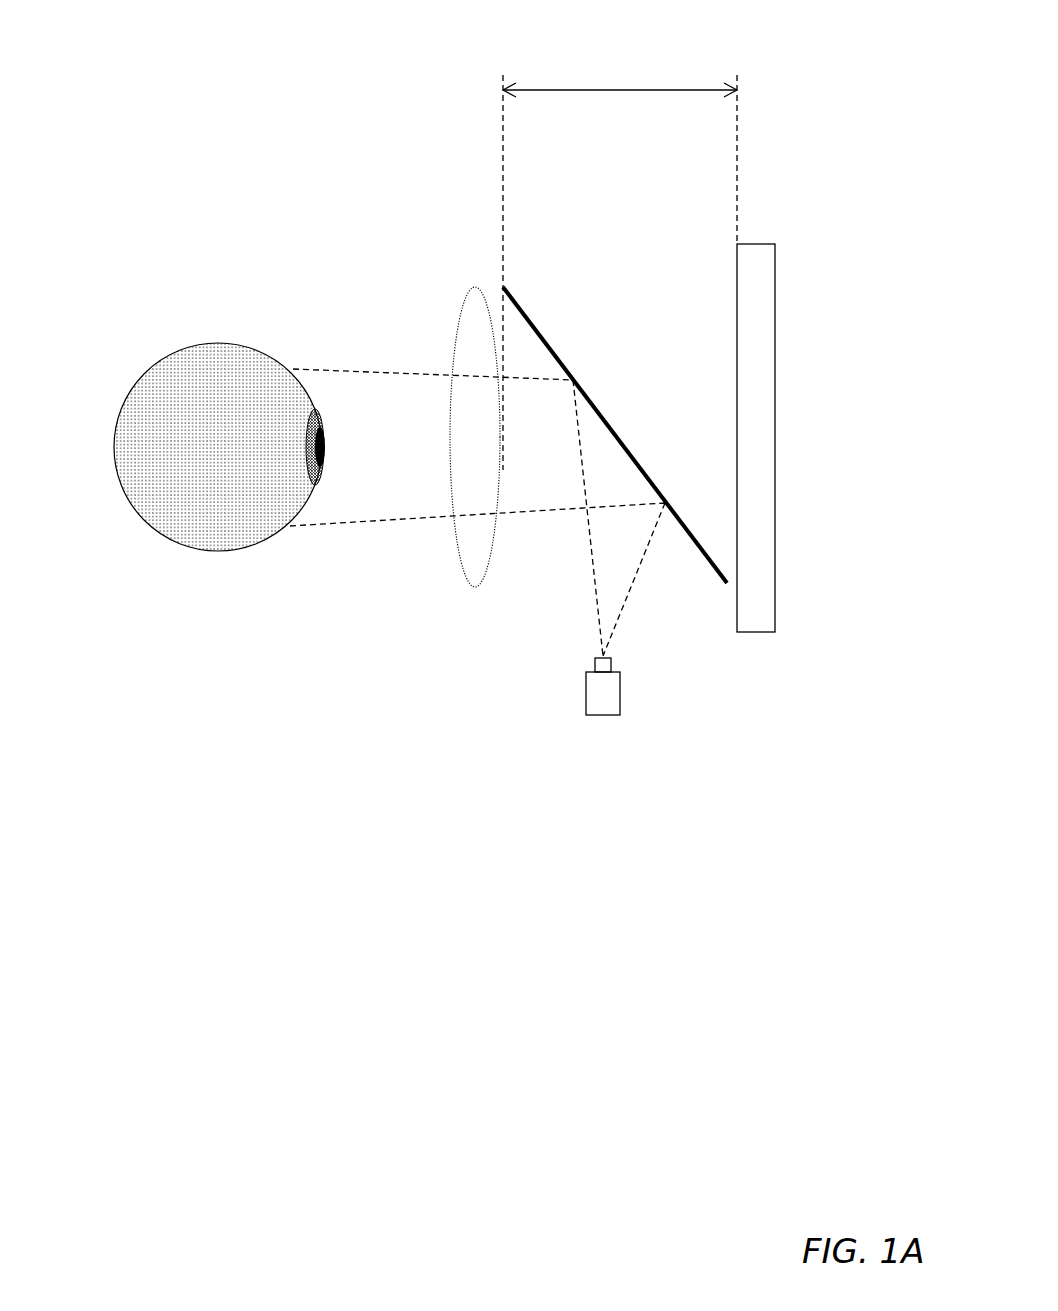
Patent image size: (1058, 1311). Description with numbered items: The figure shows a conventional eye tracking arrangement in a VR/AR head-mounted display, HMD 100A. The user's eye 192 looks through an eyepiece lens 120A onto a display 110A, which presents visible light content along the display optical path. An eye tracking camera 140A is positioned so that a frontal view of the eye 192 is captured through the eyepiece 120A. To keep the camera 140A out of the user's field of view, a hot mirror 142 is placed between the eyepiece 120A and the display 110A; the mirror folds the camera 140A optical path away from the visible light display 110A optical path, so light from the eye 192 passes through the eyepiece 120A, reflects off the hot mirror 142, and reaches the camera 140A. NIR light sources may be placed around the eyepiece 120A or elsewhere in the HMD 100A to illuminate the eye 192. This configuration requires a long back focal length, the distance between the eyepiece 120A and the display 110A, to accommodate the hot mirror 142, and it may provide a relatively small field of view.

The HMD 100A is at (802, 82).
The display 110A is at (780, 296).
The eyepiece lens 120A is at (463, 312).
The hot mirror 142 is at (620, 440).
The eye tracking camera 140A is at (600, 718).
The eye 192 is at (127, 398).